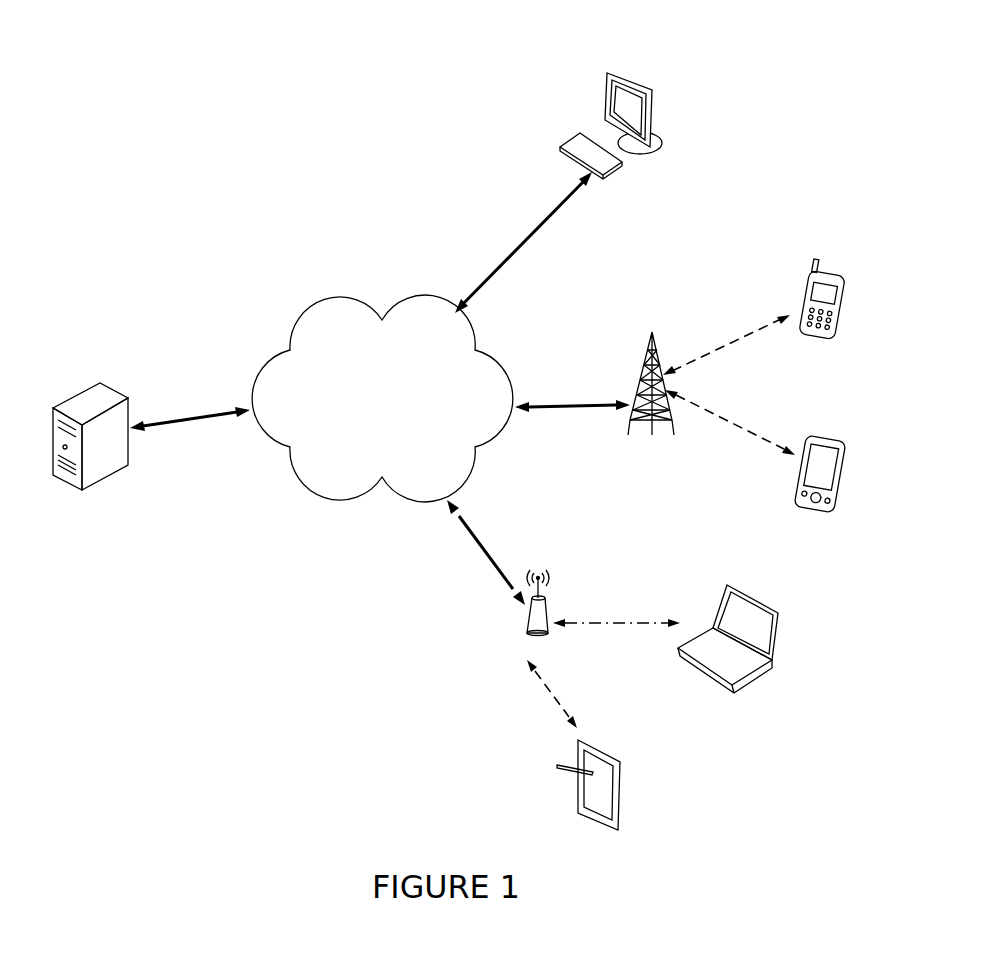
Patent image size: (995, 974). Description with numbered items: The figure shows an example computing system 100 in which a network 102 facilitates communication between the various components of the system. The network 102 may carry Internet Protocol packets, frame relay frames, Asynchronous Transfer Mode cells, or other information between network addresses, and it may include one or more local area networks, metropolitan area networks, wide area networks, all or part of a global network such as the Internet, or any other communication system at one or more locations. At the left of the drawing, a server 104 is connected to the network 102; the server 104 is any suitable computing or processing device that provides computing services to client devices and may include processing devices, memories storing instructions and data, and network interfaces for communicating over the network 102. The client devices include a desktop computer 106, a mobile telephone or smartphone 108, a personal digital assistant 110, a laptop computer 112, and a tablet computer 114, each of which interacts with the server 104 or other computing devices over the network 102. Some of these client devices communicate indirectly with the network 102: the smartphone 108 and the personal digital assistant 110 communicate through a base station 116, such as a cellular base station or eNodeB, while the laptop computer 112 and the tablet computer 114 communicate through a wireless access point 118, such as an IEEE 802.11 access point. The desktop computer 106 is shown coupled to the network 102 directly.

The computing system 100 is at (212, 166).
The network 102 is at (298, 309).
The server 104 is at (68, 400).
The desktop computer 106 is at (605, 77).
The mobile telephone or smartphone 108 is at (838, 283).
The personal digital assistant (PDA) 110 is at (835, 448).
The laptop computer 112 is at (782, 628).
The tablet computer 114 is at (625, 780).
The base station 116 is at (673, 420).
The wireless access point 118 is at (550, 608).